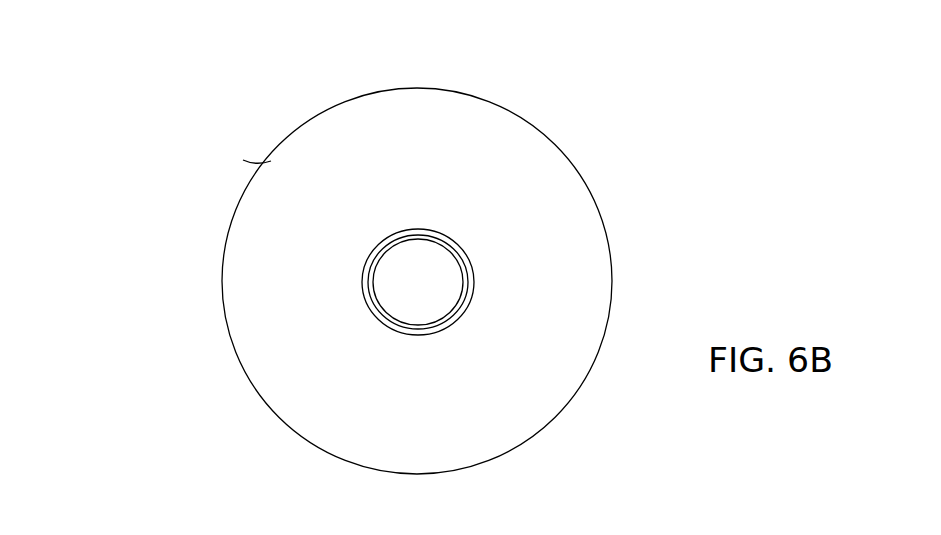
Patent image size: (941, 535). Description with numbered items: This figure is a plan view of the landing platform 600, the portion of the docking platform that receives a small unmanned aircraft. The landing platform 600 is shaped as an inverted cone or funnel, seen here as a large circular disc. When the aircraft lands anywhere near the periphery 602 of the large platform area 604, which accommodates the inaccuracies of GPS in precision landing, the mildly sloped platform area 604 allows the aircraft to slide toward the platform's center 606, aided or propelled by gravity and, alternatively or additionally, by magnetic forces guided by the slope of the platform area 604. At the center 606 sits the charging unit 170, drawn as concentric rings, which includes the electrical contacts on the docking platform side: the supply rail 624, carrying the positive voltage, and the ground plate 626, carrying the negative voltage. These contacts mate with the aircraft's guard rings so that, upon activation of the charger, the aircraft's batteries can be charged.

The landing platform 600 is at (165, 253).
The periphery 602 is at (334, 106).
The platform area 604 is at (283, 382).
The platform center 606 is at (372, 283).
The charging unit 170 is at (587, 167).
The supply rail 624 is at (627, 167).
The ground plate 626 is at (630, 164).